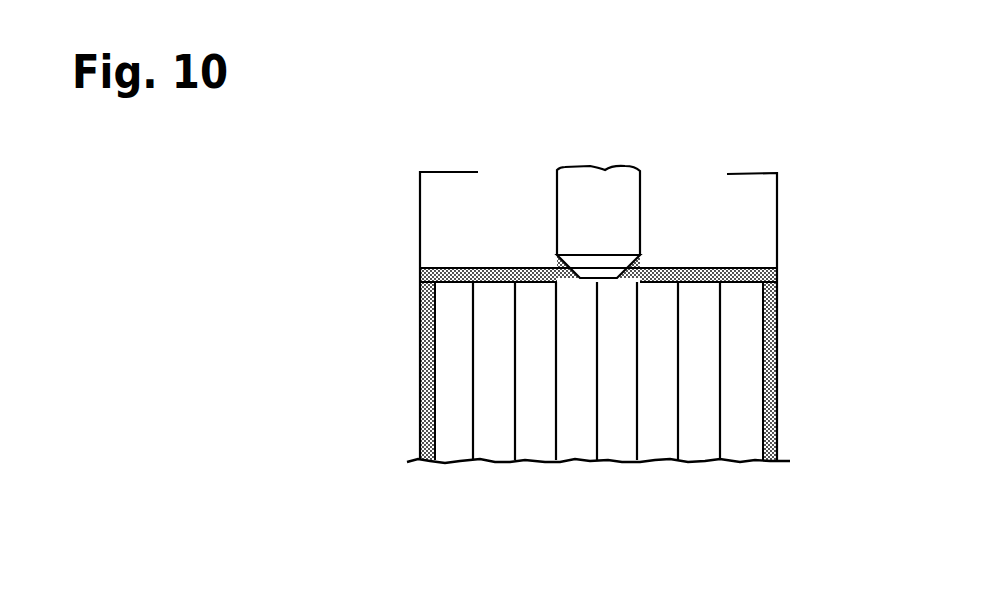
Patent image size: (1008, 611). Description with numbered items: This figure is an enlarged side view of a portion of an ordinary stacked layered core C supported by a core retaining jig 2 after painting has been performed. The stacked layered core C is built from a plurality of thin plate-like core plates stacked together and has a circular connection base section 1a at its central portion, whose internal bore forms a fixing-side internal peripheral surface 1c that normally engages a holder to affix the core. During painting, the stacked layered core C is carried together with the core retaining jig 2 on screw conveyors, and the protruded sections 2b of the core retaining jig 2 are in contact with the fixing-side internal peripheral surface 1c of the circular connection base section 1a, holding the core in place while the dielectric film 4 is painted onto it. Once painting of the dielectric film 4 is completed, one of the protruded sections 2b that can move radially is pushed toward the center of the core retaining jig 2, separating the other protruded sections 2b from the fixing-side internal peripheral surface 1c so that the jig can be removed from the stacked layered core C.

The circular connection base section 1a is at (607, 315).
The fixing-side internal peripheral surface 1c is at (497, 268).
The core retaining jig 2 is at (641, 178).
The protruded section 2b is at (580, 218).
The dielectric film 4 is at (672, 270).
The stacked layered core C is at (645, 468).